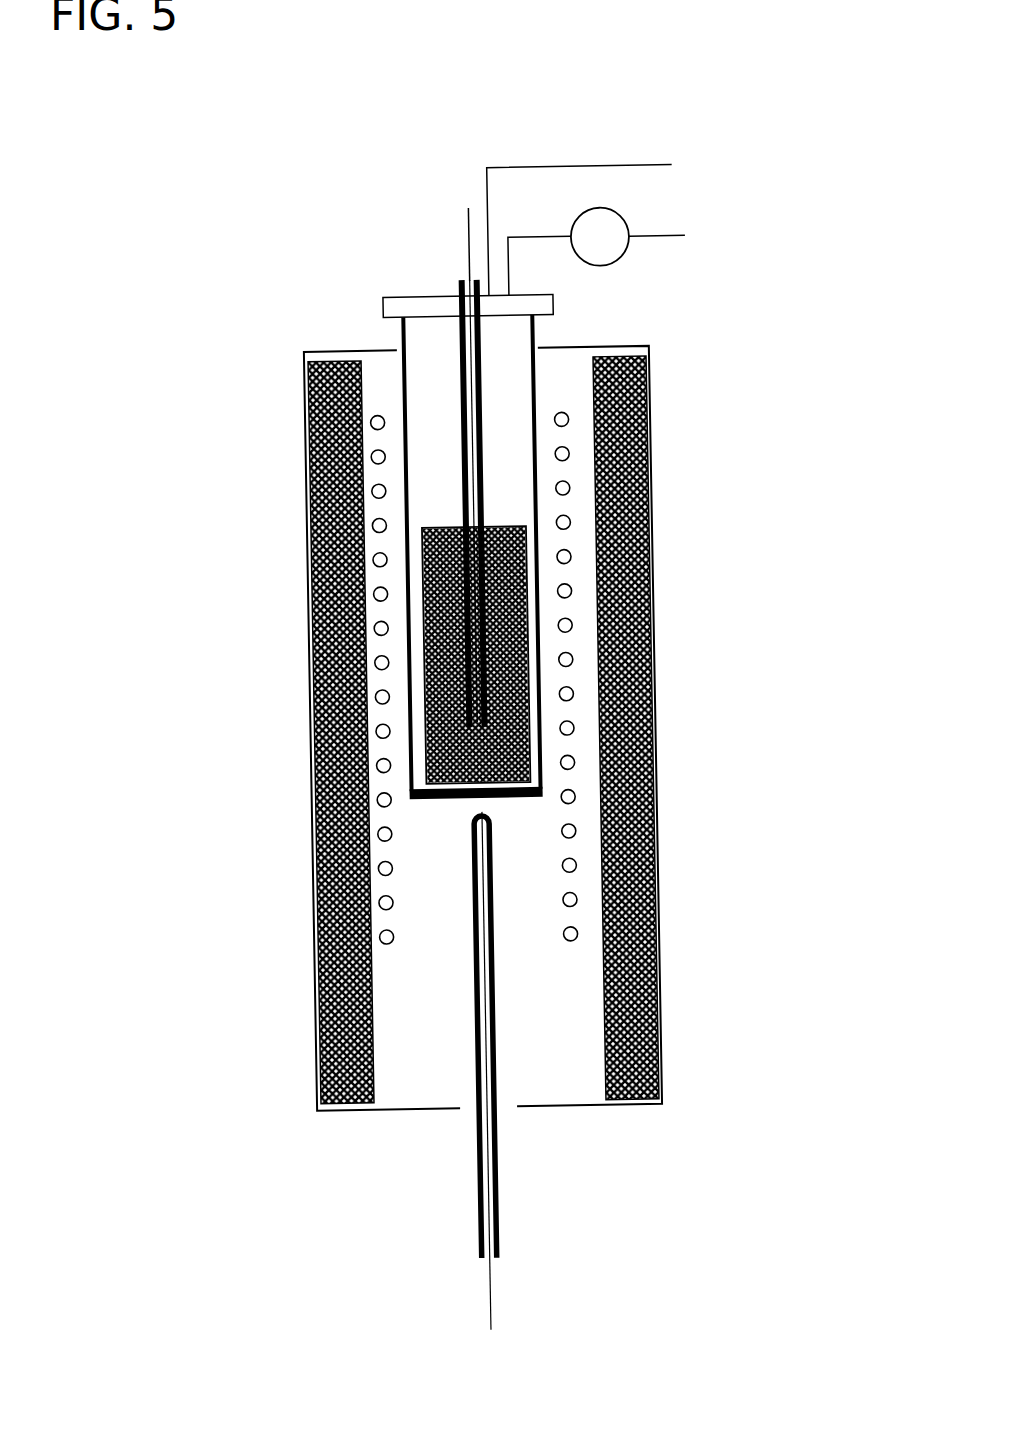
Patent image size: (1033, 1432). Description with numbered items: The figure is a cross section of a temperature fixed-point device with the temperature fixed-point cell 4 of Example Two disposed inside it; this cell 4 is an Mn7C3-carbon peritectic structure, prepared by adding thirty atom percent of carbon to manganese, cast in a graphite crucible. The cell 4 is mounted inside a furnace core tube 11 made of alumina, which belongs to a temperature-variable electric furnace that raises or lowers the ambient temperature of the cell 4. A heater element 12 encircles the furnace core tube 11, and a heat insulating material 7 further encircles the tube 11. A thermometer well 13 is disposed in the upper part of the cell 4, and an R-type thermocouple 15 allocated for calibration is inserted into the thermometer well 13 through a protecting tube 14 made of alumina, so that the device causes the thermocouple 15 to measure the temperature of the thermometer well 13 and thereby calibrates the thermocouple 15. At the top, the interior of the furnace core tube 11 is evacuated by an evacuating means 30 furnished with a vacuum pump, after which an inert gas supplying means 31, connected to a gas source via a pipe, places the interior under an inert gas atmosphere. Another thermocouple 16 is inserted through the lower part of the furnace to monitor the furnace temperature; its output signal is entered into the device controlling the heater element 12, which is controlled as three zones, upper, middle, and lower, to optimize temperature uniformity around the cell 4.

The temperature fixed-point cell 4 is at (463, 637).
The heat insulating material 7 is at (613, 893).
The furnace core tube 11 is at (534, 383).
The heater element 12 is at (565, 760).
The thermometer well 13 is at (417, 561).
The protecting tube 14 is at (461, 373).
The thermocouple 15 is at (470, 242).
The thermocouple 16 is at (475, 1293).
The evacuating means 30 is at (628, 256).
The inert gas supplying means 31 is at (587, 169).